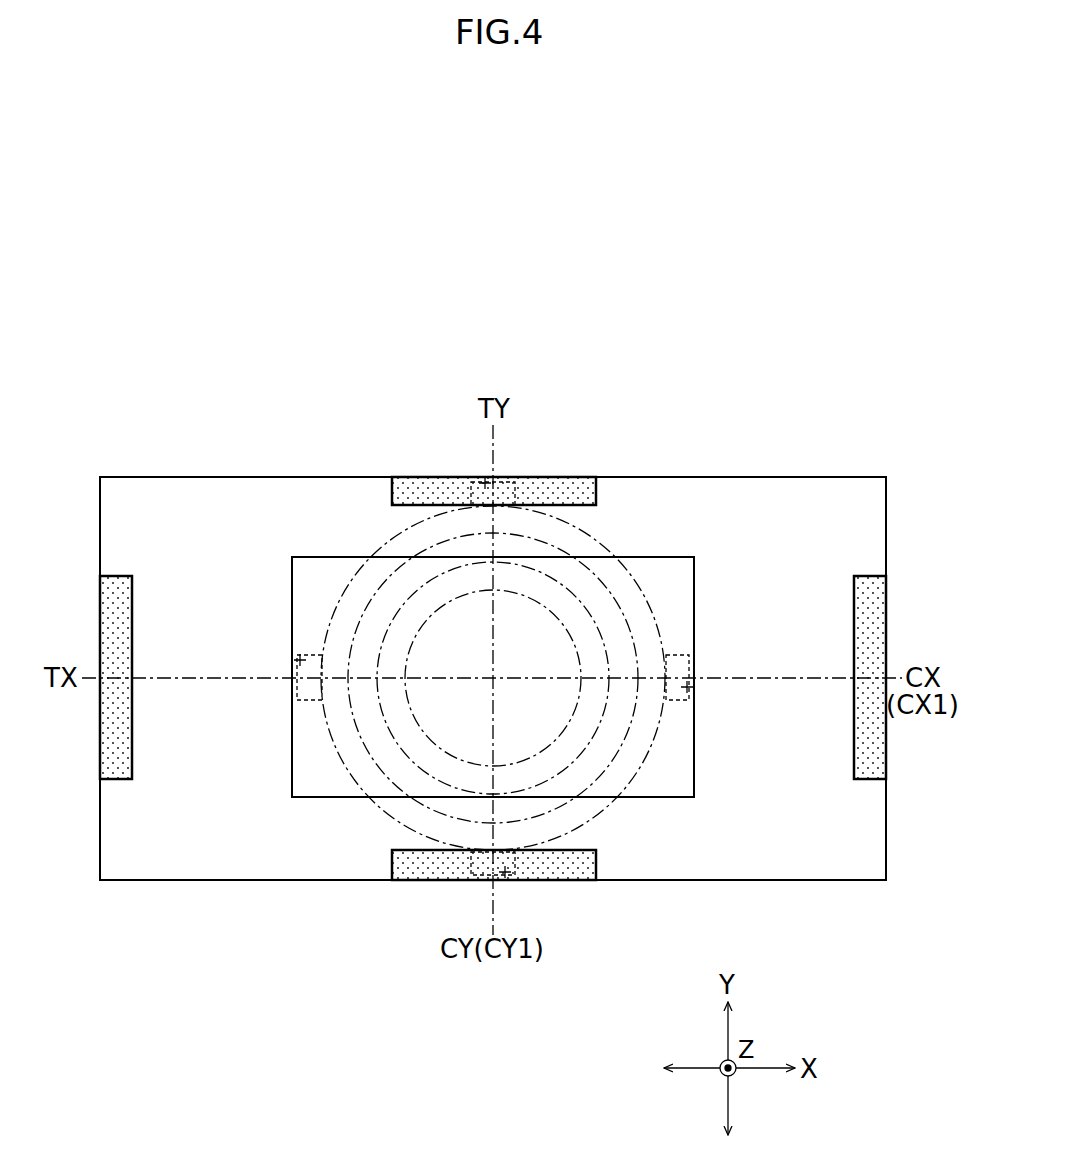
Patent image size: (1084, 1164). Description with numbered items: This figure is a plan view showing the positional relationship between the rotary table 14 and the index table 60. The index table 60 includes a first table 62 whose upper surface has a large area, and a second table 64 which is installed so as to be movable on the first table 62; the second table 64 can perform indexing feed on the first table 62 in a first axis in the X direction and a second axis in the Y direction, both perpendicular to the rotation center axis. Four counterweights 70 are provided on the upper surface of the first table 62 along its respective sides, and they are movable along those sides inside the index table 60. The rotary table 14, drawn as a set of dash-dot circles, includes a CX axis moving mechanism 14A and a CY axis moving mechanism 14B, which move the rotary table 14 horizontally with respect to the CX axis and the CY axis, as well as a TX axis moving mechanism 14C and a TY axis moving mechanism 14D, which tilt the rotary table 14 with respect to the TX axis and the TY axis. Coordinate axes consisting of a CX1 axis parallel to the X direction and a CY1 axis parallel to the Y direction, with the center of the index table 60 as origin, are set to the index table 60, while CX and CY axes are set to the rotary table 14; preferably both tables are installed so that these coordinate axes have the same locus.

The index table 60 is at (850, 456).
The first table 62 is at (806, 478).
The second table 64 is at (695, 584).
The counterweights 70 is at (108, 748).
The rotary table 14 is at (612, 541).
The CX axis moving mechanism 14A is at (690, 688).
The CY axis moving mechanism 14B is at (510, 872).
The TX axis moving mechanism 14C is at (297, 660).
The TY axis moving mechanism 14D is at (487, 482).